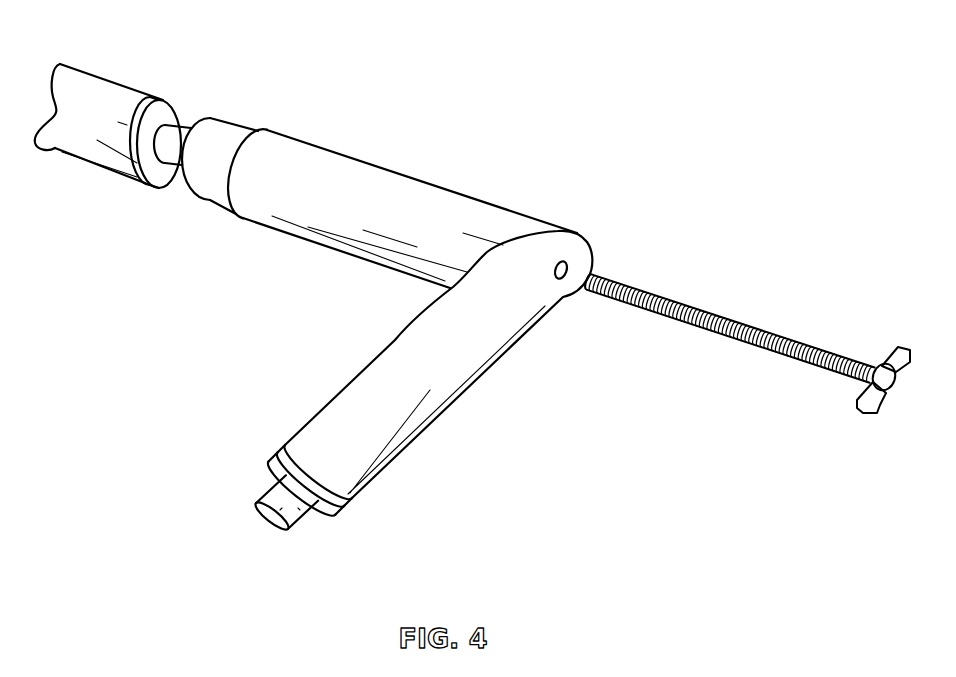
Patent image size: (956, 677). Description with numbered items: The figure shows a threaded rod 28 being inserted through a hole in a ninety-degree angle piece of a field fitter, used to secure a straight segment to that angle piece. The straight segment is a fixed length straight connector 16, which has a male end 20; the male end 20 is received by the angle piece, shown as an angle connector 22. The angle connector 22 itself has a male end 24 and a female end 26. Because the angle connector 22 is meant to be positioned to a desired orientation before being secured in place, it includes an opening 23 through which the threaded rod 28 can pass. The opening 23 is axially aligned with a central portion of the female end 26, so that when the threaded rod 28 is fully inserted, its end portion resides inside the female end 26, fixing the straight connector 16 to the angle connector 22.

The fixed length straight connector 16 is at (98, 85).
The male end 20 is at (180, 135).
The angle connector 22 is at (318, 162).
The opening 23 is at (565, 260).
The male end 24 is at (297, 520).
The female end 26 is at (235, 135).
The threaded rod 28 is at (770, 328).